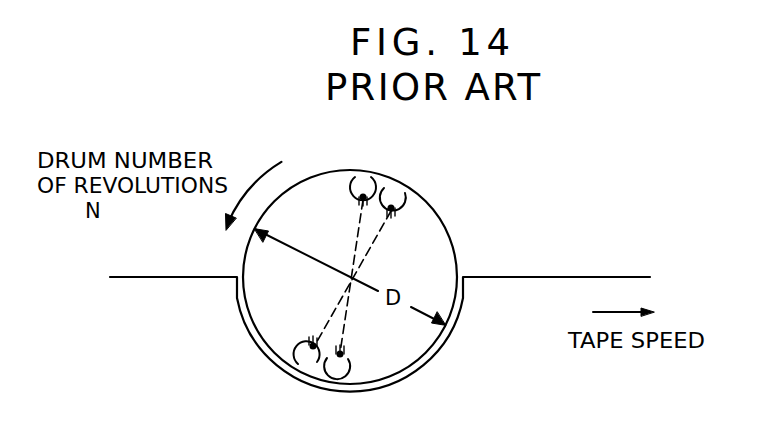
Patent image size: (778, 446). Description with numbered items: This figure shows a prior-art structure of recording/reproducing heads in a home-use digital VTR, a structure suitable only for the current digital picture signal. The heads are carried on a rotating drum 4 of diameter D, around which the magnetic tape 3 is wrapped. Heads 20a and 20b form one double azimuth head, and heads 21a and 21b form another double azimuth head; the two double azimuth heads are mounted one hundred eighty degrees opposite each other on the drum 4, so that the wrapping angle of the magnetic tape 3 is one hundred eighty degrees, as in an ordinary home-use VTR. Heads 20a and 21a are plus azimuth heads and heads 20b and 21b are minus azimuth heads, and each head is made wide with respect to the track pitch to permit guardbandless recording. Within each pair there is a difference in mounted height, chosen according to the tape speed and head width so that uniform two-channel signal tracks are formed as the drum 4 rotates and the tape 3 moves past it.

The magnetic tape 3 is at (577, 279).
The rotating drum 4 is at (276, 285).
The plus azimuth head 21a is at (365, 183).
The minus azimuth head 21b is at (406, 200).
The plus azimuth head 20a is at (346, 367).
The minus azimuth head 20b is at (291, 368).